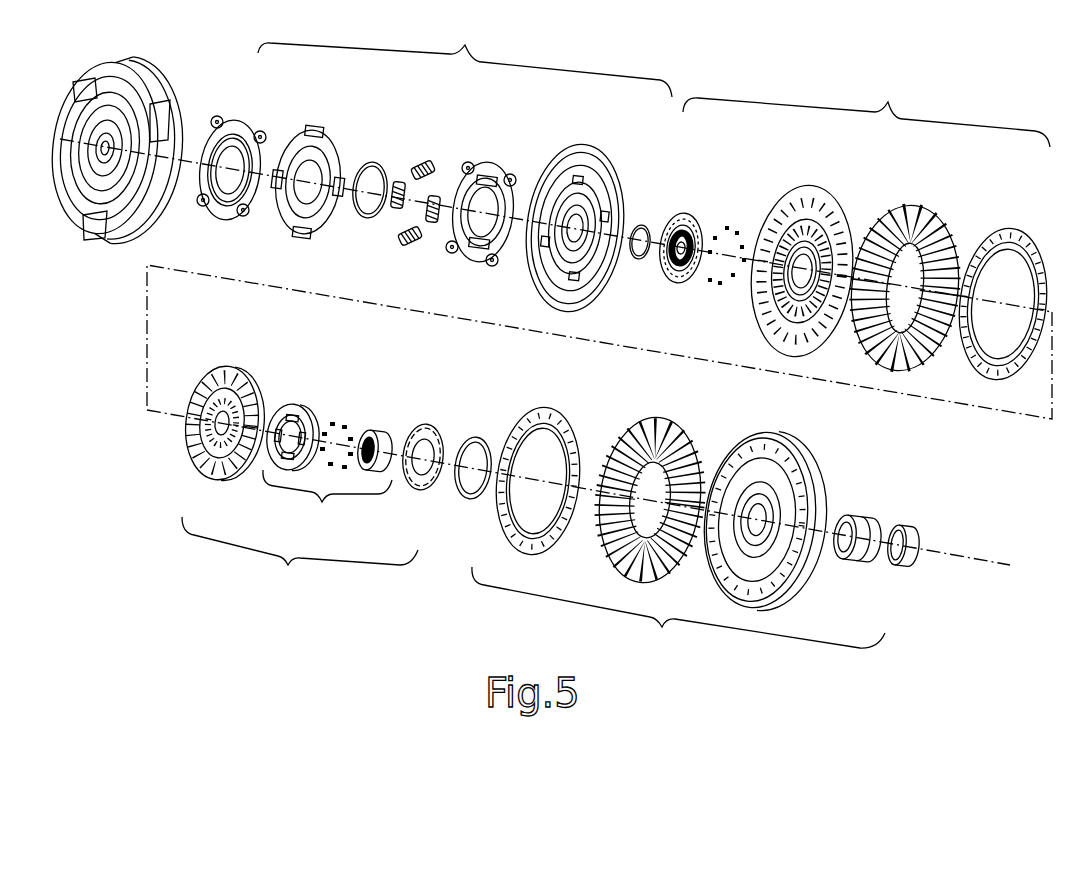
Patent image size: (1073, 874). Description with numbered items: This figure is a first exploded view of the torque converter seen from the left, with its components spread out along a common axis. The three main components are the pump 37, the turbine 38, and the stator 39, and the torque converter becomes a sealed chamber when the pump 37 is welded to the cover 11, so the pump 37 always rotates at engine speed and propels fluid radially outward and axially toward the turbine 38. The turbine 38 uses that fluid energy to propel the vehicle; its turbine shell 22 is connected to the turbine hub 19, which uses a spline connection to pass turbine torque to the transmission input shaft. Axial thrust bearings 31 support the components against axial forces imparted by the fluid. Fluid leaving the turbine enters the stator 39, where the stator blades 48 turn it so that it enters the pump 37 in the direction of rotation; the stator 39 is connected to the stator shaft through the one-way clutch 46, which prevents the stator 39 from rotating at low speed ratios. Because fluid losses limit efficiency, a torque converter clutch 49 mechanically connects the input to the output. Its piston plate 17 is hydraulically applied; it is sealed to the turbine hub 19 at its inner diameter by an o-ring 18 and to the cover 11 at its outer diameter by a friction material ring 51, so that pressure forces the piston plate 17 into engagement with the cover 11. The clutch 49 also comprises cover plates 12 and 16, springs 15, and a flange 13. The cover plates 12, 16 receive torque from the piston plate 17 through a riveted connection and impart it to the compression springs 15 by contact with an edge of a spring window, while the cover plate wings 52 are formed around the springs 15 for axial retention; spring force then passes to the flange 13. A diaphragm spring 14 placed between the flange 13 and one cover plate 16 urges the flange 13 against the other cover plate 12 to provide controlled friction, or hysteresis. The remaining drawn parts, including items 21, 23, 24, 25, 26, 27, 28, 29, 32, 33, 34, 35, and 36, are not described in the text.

The cover 11 is at (183, 85).
The cover plate wings 52 is at (235, 127).
The cover plate 12 is at (270, 118).
The flange 13 is at (337, 120).
The diaphragm spring 14 is at (378, 160).
The springs 15 is at (437, 157).
The cover plate 16 is at (505, 158).
The friction material ring 51 is at (578, 150).
The piston plate 17 is at (613, 150).
The o-ring 18 is at (653, 210).
The turbine hub 19 is at (697, 202).
The roller set 21 is at (738, 215).
The turbine shell 22 is at (830, 177).
The turbine blade wheel 23 is at (937, 200).
The turbine core ring 24 is at (1017, 223).
The turbine 38 is at (866, 105).
The torque converter clutch 49 is at (465, 56).
The stator blades 48 is at (228, 373).
The stator 25 is at (252, 363).
The one-way clutch race 26 is at (305, 387).
The rollers 27 is at (347, 407).
The inner race bearing 28 is at (390, 417).
The thrust washer 29 is at (438, 417).
The one-way clutch 46 is at (327, 505).
The stator 39 is at (300, 561).
The axial thrust bearings 31 is at (485, 427).
The impeller core ring 32 is at (578, 410).
The impeller blade wheel 33 is at (688, 422).
The impeller shell 34 is at (825, 450).
The impeller hub 35 is at (873, 498).
The hub bushing 36 is at (917, 520).
The pump 37 is at (678, 617).